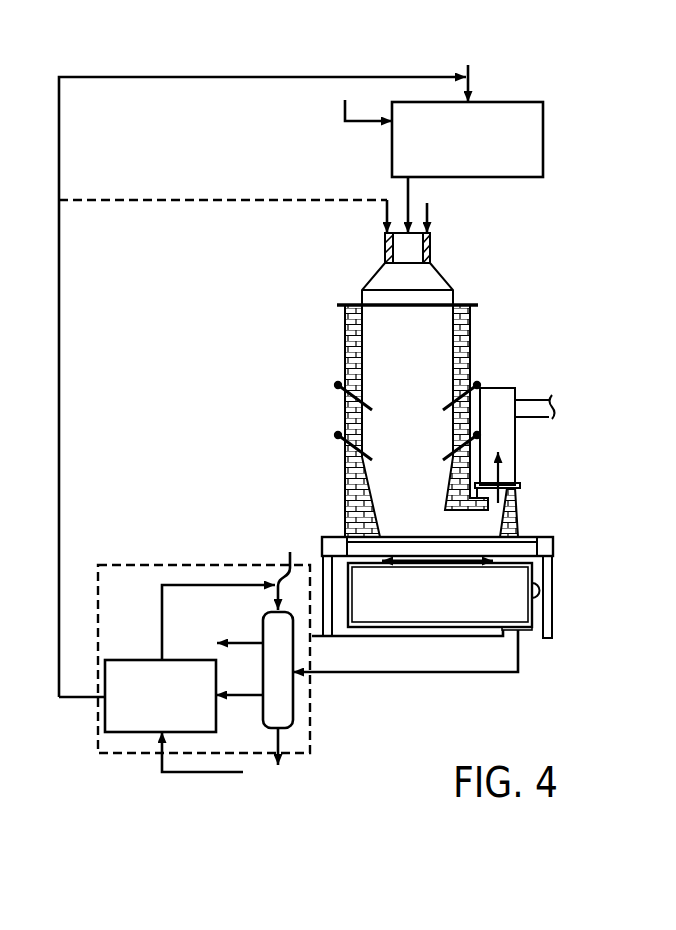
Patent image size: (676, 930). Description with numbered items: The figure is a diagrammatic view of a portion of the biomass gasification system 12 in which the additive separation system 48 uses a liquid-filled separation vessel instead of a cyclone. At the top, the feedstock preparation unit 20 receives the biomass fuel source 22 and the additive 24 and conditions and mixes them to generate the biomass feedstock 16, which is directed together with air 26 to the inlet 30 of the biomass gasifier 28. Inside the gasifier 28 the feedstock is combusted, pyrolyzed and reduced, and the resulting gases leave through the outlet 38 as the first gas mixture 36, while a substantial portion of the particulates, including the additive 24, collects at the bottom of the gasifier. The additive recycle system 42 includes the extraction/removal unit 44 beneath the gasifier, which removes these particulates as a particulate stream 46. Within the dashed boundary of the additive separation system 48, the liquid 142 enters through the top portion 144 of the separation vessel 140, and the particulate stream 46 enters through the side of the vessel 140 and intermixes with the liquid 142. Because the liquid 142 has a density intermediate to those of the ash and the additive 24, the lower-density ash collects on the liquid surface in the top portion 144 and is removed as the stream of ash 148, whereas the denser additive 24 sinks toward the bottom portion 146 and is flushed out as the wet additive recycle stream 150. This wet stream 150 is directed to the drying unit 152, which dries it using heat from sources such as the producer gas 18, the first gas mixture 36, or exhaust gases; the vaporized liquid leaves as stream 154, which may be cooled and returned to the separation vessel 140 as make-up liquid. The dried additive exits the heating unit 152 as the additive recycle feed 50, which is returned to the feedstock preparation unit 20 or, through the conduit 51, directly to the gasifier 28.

The biomass gasification system 12 is at (601, 85).
The biomass feedstock 16 is at (406, 199).
The treated producer gas 18 is at (203, 773).
The feedstock preparation unit 20 is at (531, 102).
The biomass fuel source 22 is at (345, 106).
The additive 24 is at (470, 66).
The air 26 is at (429, 205).
The biomass gasifier 28 is at (522, 247).
The inlet 30 is at (431, 243).
The first gas mixture 36 is at (500, 478).
The outlet 38 is at (538, 400).
The additive recycle system 42 is at (561, 694).
The extraction/removal unit 44 is at (438, 628).
The particulate stream 46 is at (518, 650).
The additive separation system 48 is at (98, 658).
The additive recycle feed 50 is at (60, 308).
The conduit 51 is at (343, 200).
The separation vessel 140 is at (265, 612).
The liquid 142 is at (295, 568).
The top portion 144 is at (297, 643).
The bottom portion 146 is at (297, 706).
The stream of ash 148 is at (245, 641).
The wet additive recycle stream 150 is at (240, 697).
The drying unit 152 is at (135, 660).
The stream 154 is at (213, 585).